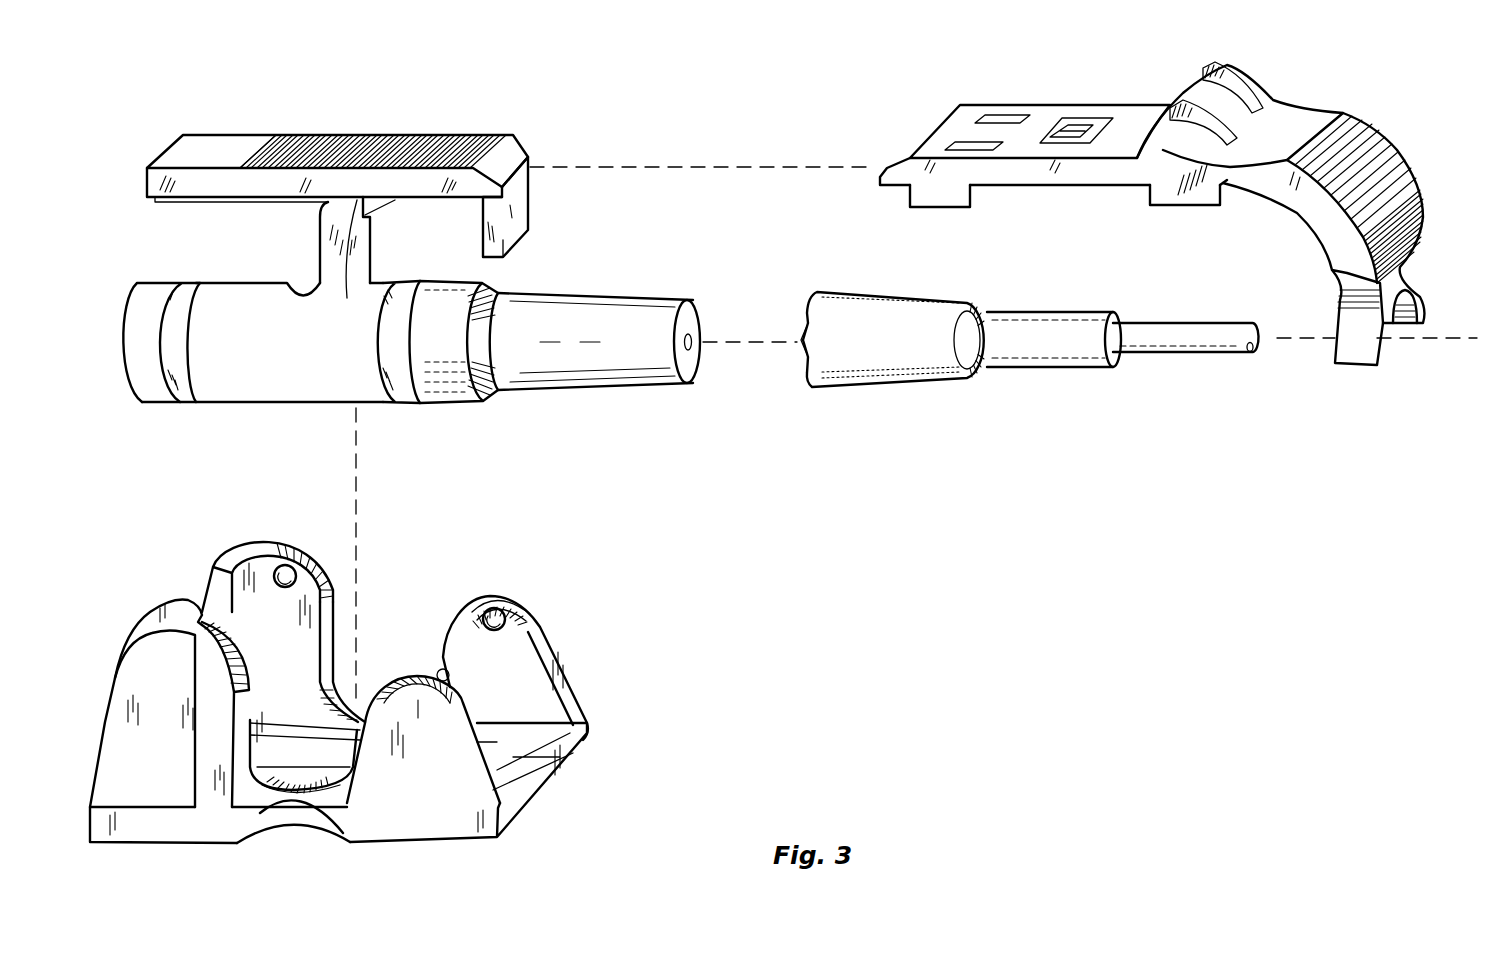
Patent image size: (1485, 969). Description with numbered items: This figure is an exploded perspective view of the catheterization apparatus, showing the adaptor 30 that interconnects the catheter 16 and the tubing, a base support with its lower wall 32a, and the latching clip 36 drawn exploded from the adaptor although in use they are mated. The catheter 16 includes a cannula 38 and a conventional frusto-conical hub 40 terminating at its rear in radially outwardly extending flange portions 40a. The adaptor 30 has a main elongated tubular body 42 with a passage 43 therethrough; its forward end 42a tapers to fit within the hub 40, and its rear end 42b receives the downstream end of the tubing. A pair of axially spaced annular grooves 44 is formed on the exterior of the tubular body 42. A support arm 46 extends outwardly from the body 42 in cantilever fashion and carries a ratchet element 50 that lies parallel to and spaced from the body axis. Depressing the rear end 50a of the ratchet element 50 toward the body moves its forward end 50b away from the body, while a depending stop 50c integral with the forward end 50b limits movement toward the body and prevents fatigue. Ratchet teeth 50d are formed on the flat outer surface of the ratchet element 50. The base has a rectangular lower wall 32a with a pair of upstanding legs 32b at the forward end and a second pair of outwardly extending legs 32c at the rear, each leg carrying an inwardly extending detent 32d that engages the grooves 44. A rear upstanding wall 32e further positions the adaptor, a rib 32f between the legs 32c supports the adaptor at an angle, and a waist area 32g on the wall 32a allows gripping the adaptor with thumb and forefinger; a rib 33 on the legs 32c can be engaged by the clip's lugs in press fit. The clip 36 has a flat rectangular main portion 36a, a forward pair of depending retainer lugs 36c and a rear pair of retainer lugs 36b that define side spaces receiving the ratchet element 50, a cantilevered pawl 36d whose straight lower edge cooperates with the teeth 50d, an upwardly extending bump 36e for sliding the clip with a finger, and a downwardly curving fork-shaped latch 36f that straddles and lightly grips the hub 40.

The catheter 16 is at (1018, 388).
The adaptor 30 is at (241, 408).
The lower wall 32a is at (527, 792).
The upstanding legs 32b is at (552, 650).
The outwardly extending legs 32c is at (327, 557).
The detent 32d is at (272, 564).
The rear upstanding wall 32e is at (230, 560).
The rib 32f is at (292, 727).
The waist area 32g is at (257, 803).
The rib 33 is at (297, 540).
The latching clip 36 is at (1357, 113).
The main portion 36a is at (1095, 148).
The rear retainer lugs 36b is at (945, 205).
The forward retainer lugs 36c is at (1197, 205).
The pawl 36d is at (1082, 128).
The bump 36e is at (1185, 97).
The fork-shaped latch 36f is at (1420, 300).
The cannula 38 is at (1190, 330).
The hub 40 is at (895, 393).
The flange portions 40a is at (800, 345).
The tubular body 42 is at (463, 408).
The forward end 42a is at (563, 313).
The rear end 42b is at (133, 283).
The passage 43 is at (690, 333).
The annular grooves 44 is at (190, 283).
The support arm 46 is at (360, 240).
The ratchet element 50 is at (203, 133).
The rear end 50a is at (172, 150).
The forward end 50b is at (520, 152).
The stop 50c is at (520, 203).
The ratchet teeth 50d is at (405, 135).